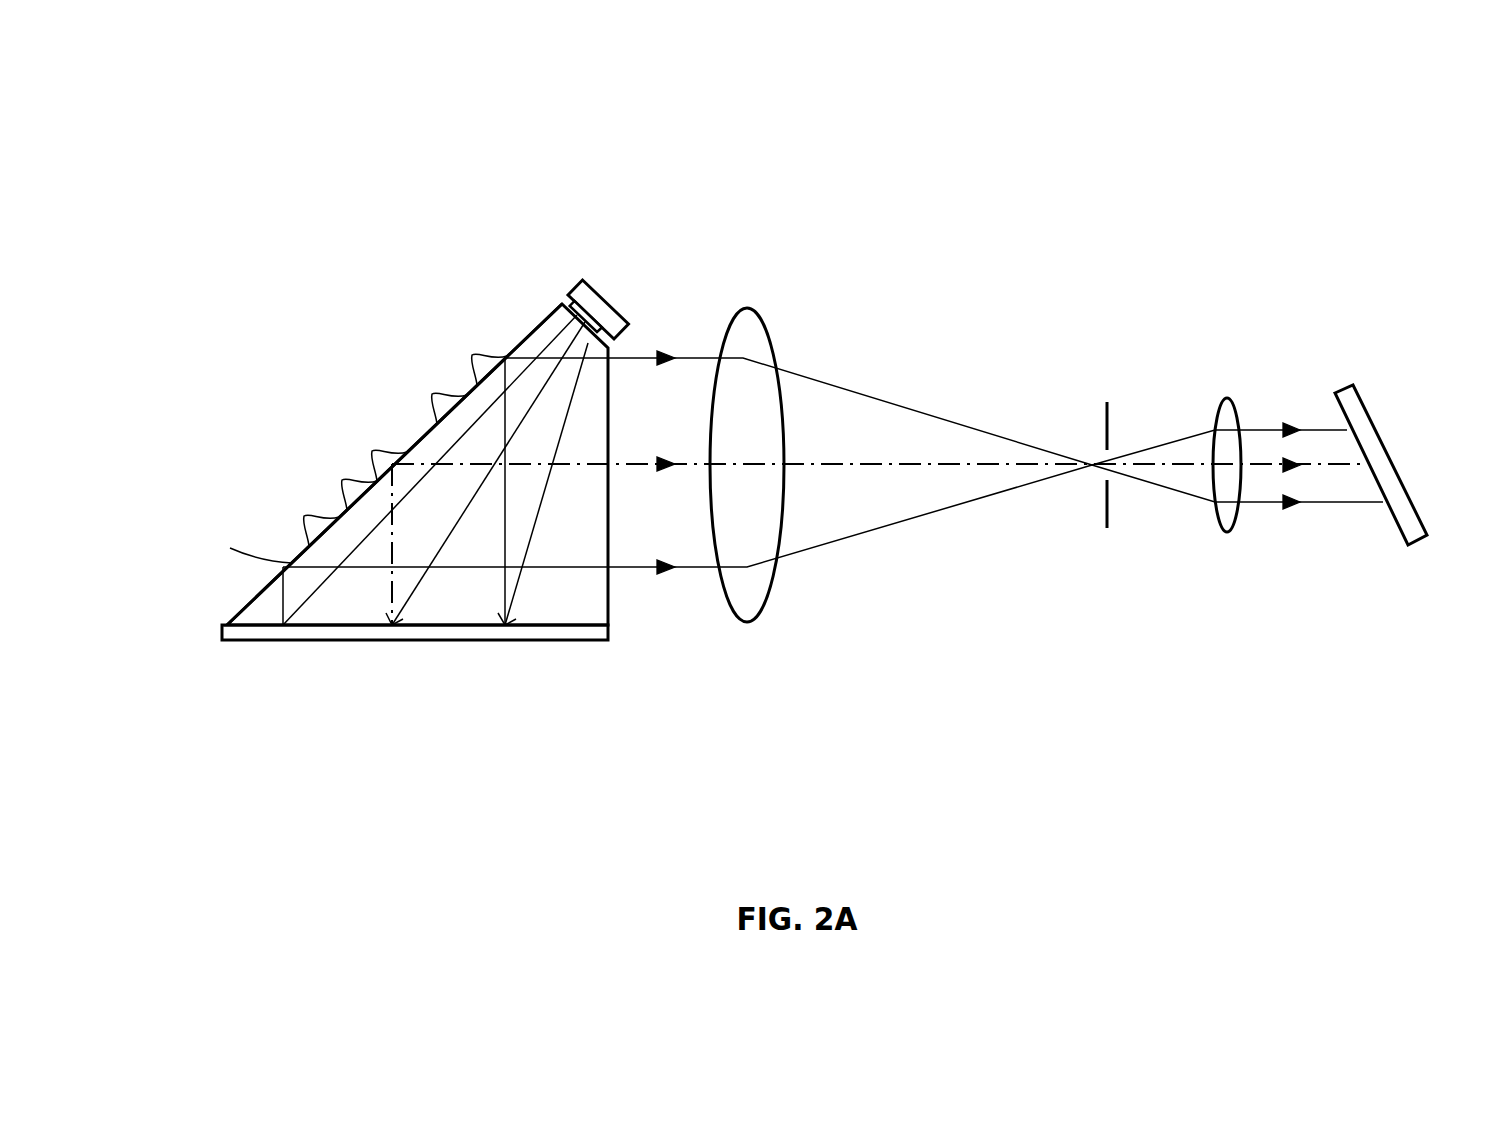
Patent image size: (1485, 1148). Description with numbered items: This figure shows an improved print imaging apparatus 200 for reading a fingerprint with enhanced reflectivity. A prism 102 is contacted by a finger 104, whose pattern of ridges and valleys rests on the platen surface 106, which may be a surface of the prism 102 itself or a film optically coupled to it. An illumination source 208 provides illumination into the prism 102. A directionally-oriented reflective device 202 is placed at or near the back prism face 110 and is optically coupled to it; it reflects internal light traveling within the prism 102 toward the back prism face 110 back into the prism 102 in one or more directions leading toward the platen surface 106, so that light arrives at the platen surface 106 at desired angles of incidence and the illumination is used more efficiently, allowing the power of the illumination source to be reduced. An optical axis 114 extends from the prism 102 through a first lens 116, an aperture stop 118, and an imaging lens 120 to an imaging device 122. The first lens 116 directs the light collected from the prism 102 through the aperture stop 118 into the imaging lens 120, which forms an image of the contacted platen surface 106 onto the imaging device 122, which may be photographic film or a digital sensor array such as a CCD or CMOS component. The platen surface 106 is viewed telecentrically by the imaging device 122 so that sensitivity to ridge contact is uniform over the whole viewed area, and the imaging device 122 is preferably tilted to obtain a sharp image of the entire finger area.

The print imaging apparatus 200 is at (1103, 124).
The prism 102 is at (272, 598).
The finger 104 is at (448, 357).
The platen surface 106 is at (530, 334).
The illumination source 208 is at (607, 296).
The directionally-oriented reflective device 202 is at (345, 641).
The back prism face 110 is at (563, 625).
The optical axis 114 is at (877, 462).
The first lens 116 is at (747, 308).
The aperture stop 118 is at (1107, 390).
The imaging lens 120 is at (1232, 538).
The imaging device 122 is at (1385, 438).